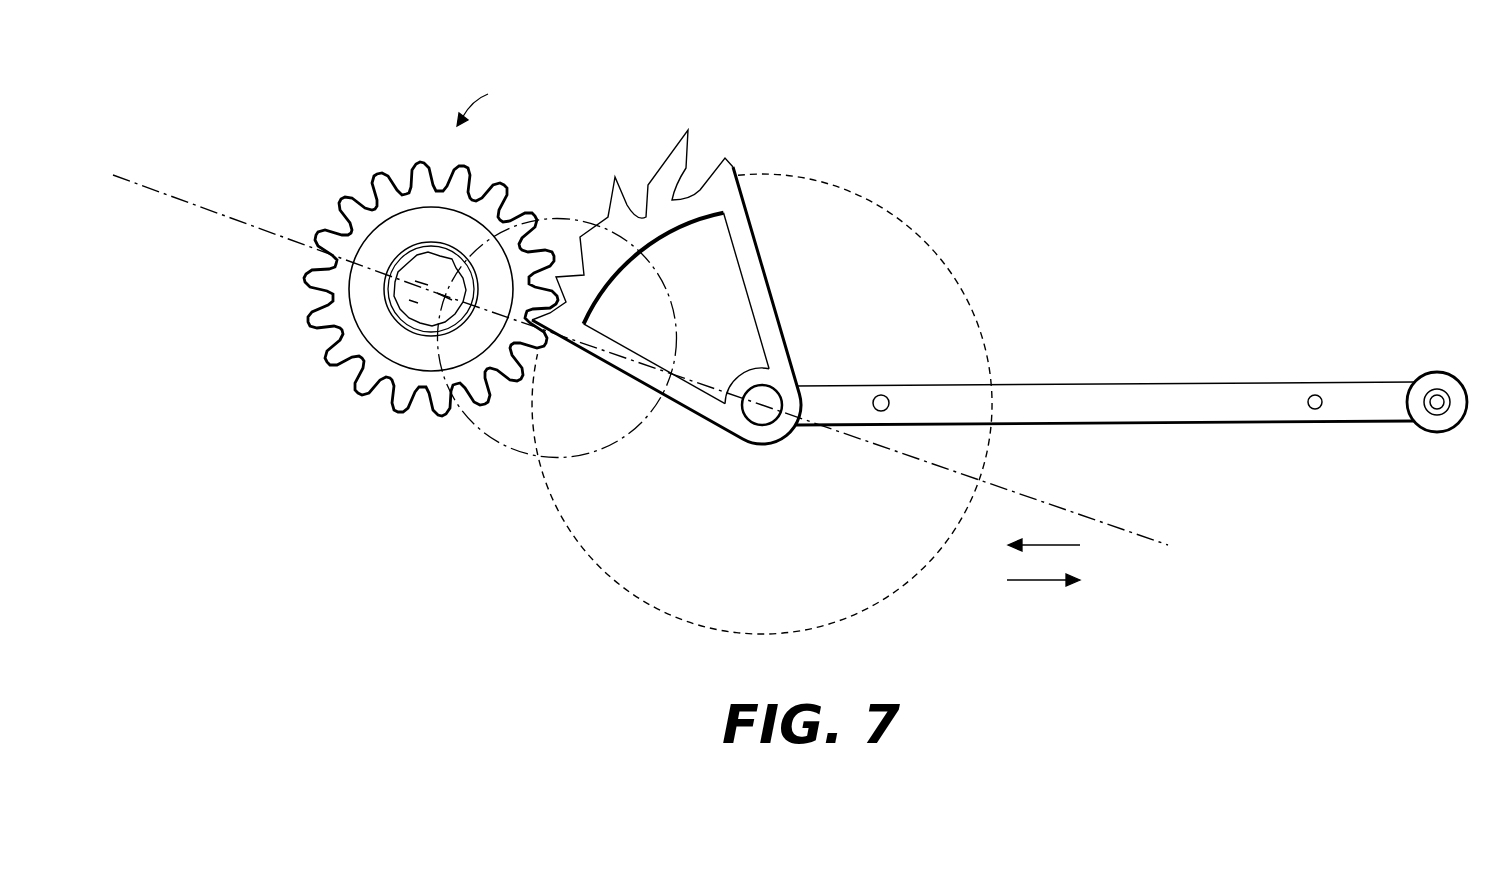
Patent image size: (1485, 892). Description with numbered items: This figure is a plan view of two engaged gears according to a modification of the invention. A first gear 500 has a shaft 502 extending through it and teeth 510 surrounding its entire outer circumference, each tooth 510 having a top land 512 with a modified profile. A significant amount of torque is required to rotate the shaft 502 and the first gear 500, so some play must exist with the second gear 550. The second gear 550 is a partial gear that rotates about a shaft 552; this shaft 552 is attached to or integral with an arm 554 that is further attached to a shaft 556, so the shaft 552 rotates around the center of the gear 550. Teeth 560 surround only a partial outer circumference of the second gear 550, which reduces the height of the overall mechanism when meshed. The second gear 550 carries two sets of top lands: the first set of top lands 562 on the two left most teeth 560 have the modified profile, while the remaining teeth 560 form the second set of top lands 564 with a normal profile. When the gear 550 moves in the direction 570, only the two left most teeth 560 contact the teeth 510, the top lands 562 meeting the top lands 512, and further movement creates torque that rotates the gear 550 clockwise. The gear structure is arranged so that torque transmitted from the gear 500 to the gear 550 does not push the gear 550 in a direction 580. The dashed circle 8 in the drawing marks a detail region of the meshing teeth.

The detail circle for FIG. 8 is at (562, 218).
The first gear 500 is at (411, 251).
The shaft 502 is at (403, 302).
The teeth 510 is at (490, 101).
The top land 512 is at (466, 166).
The second gear 550 is at (686, 279).
The shaft 552 is at (758, 421).
The arm 554 is at (1131, 381).
The shaft 556 is at (1433, 372).
The teeth 560 is at (667, 189).
The first set of top lands 562 is at (536, 322).
The second set of top lands 564 is at (642, 141).
The direction 570 is at (1070, 547).
The direction 580 is at (1040, 581).